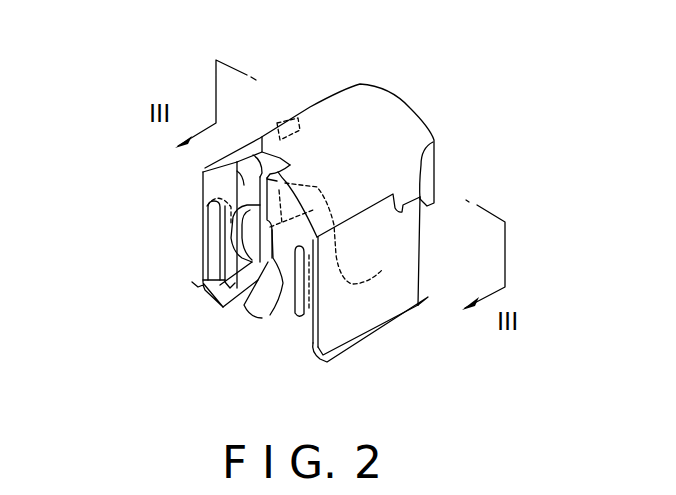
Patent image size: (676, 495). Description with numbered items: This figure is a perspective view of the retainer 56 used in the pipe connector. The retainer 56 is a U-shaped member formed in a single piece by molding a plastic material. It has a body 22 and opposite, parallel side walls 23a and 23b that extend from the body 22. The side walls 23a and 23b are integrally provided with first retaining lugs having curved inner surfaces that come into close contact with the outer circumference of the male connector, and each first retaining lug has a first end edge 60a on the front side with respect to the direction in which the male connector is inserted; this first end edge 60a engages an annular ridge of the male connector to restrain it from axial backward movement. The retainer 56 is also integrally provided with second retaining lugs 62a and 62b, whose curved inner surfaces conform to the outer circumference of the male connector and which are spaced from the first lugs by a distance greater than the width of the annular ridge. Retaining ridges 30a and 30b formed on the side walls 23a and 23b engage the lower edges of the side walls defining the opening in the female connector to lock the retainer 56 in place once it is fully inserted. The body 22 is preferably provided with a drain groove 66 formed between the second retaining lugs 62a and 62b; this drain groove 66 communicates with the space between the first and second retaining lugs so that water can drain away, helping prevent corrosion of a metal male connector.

The retainer 56 is at (466, 74).
The body 22 is at (357, 100).
The drain groove 66 is at (237, 174).
The side wall 23a is at (203, 221).
The side wall 23b is at (403, 252).
The second retaining lug 62a is at (222, 246).
The second retaining lug 62b is at (290, 284).
The retaining ridge 30a is at (200, 291).
The retaining ridge 30b is at (383, 337).
The first end edge 60a is at (283, 272).